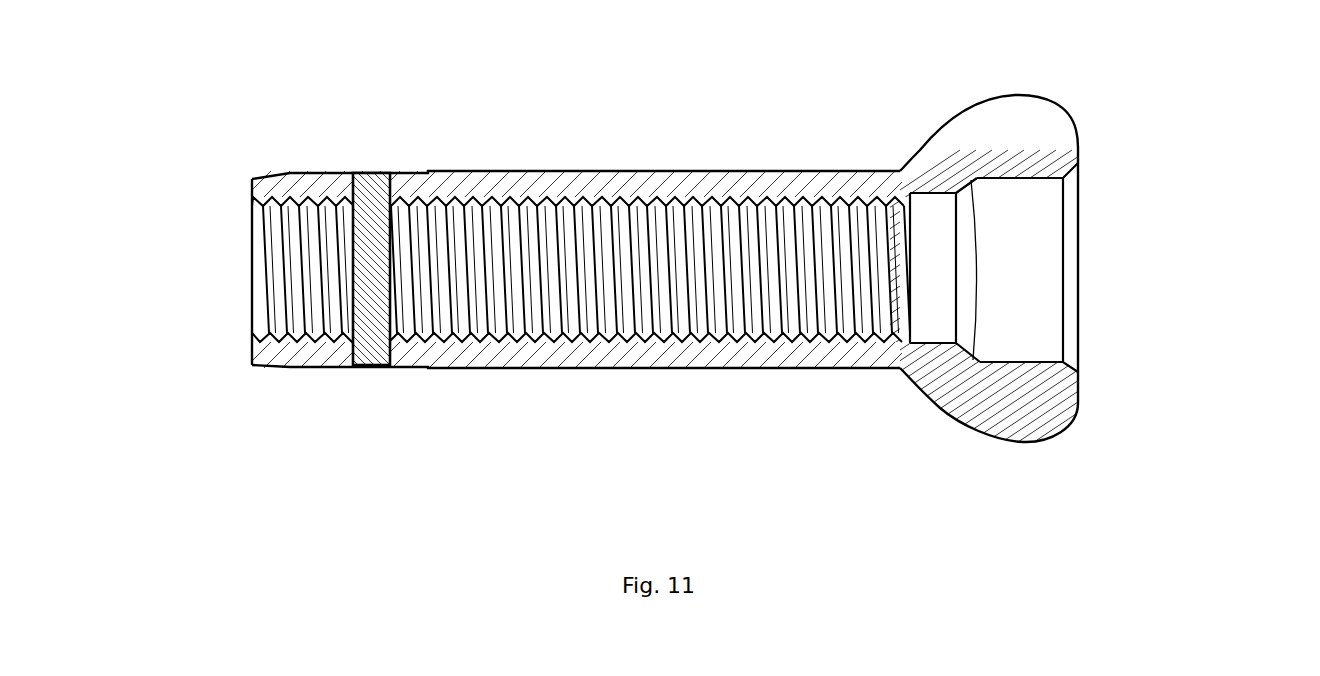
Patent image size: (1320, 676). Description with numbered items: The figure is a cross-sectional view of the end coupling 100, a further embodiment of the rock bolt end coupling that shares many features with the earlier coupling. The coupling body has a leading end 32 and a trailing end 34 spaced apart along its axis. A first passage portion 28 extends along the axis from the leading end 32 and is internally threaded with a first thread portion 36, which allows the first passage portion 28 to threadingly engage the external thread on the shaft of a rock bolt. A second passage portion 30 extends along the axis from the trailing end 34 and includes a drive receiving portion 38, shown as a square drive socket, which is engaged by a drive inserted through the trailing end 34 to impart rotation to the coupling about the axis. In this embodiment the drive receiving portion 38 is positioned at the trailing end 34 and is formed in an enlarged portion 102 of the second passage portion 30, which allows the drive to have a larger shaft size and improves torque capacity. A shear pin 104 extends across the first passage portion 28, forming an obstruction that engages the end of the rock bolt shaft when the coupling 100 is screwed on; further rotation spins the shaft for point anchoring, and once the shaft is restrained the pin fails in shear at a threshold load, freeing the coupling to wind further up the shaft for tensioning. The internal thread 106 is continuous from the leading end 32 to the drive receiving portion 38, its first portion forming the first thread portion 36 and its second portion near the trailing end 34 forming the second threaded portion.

The first passage portion 28 is at (272, 330).
The second passage portion 30 is at (931, 325).
The leading end 32 is at (273, 166).
The trailing end 34 is at (1052, 423).
The first thread portion 36 is at (352, 370).
The drive receiving portion 38 is at (1050, 339).
The coupling 100 is at (1118, 216).
The enlarged portion 102 is at (1009, 199).
The shear pin 104 is at (459, 207).
The internal thread 106 is at (686, 210).